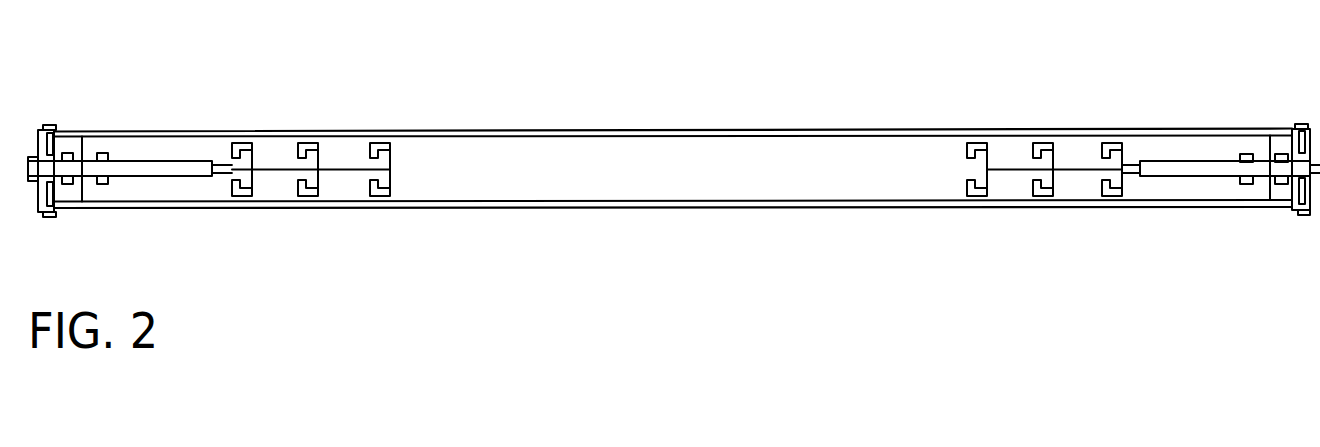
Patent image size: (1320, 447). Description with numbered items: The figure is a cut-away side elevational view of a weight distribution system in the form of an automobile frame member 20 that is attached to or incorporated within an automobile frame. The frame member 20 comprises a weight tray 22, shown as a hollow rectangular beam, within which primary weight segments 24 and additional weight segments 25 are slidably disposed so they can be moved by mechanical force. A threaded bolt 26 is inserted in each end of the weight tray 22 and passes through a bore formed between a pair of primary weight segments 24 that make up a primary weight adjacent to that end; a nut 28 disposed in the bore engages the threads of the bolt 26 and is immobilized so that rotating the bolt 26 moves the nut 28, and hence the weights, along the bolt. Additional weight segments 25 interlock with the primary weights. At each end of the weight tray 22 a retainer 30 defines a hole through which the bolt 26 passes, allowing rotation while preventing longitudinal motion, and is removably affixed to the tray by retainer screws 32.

The automobile frame member 20 is at (797, 118).
The weight tray 22 is at (642, 129).
The primary weight segment 24 is at (192, 147).
The additional weight segment 25 is at (278, 153).
The threaded bolt 26 is at (171, 178).
The nut 28 is at (104, 157).
The retainer 30 is at (58, 189).
The retainer screw 32 is at (1301, 125).